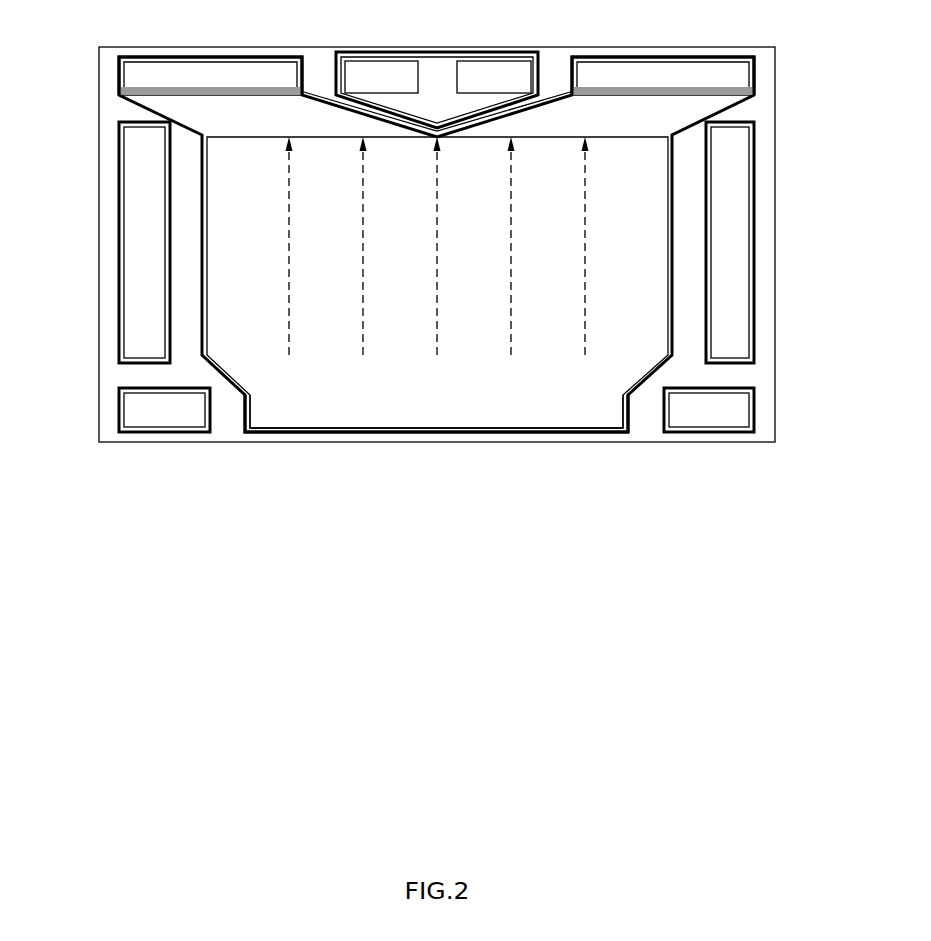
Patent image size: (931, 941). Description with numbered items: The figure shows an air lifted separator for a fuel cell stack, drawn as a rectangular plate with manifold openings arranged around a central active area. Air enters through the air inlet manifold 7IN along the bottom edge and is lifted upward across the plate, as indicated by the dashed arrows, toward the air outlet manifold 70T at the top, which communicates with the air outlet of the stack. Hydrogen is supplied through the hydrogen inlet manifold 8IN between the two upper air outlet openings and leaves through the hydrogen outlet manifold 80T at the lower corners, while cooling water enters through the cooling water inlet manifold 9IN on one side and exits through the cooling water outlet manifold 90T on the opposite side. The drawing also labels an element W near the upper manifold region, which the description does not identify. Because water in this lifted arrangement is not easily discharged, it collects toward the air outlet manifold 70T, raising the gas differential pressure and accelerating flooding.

The wiring W is at (136, 92).
The air outlet manifold 70T is at (211, 76).
The hydrogen inlet manifold 8IN is at (392, 77).
The cooling water outlet manifold 90T is at (140, 262).
The cooling water inlet manifold 9IN is at (735, 263).
The hydrogen outlet manifold 80T is at (167, 413).
The air inlet manifold 7IN is at (437, 413).